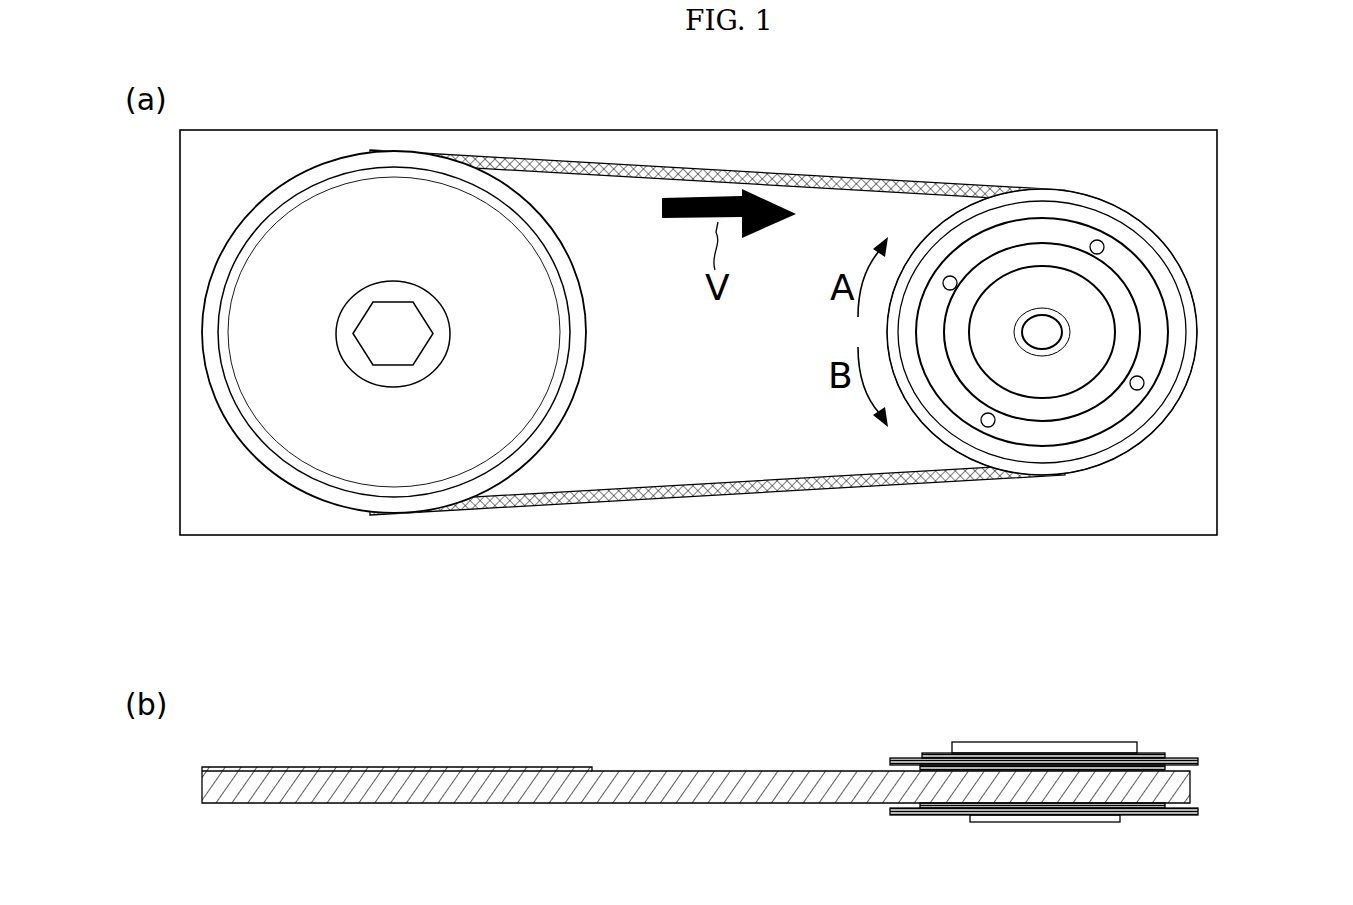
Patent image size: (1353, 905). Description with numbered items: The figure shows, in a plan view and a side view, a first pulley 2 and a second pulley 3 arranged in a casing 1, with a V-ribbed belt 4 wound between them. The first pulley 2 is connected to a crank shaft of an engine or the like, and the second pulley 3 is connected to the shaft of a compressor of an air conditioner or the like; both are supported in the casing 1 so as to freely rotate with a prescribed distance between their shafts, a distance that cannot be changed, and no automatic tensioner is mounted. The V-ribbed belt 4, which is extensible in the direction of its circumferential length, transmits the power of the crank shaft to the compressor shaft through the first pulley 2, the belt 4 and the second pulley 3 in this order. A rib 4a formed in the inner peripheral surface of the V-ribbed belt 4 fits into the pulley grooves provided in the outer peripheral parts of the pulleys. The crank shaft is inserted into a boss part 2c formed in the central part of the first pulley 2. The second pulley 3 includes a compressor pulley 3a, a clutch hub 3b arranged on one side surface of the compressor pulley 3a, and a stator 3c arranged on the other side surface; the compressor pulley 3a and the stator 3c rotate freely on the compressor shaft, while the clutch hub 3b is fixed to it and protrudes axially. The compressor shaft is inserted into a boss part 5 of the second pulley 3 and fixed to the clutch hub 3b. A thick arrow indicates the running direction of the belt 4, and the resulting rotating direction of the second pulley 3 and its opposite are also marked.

The casing 1 is at (410, 130).
The first pulley 2 is at (270, 163).
The boss part 2c is at (415, 333).
The second pulley 3 is at (1145, 173).
The compressor pulley 3a is at (1196, 292).
The clutch hub 3b is at (1140, 350).
The stator 3c is at (1120, 821).
The V-ribbed belt 4 is at (629, 165).
The rib 4a is at (596, 178).
The boss part 5 is at (1053, 338).